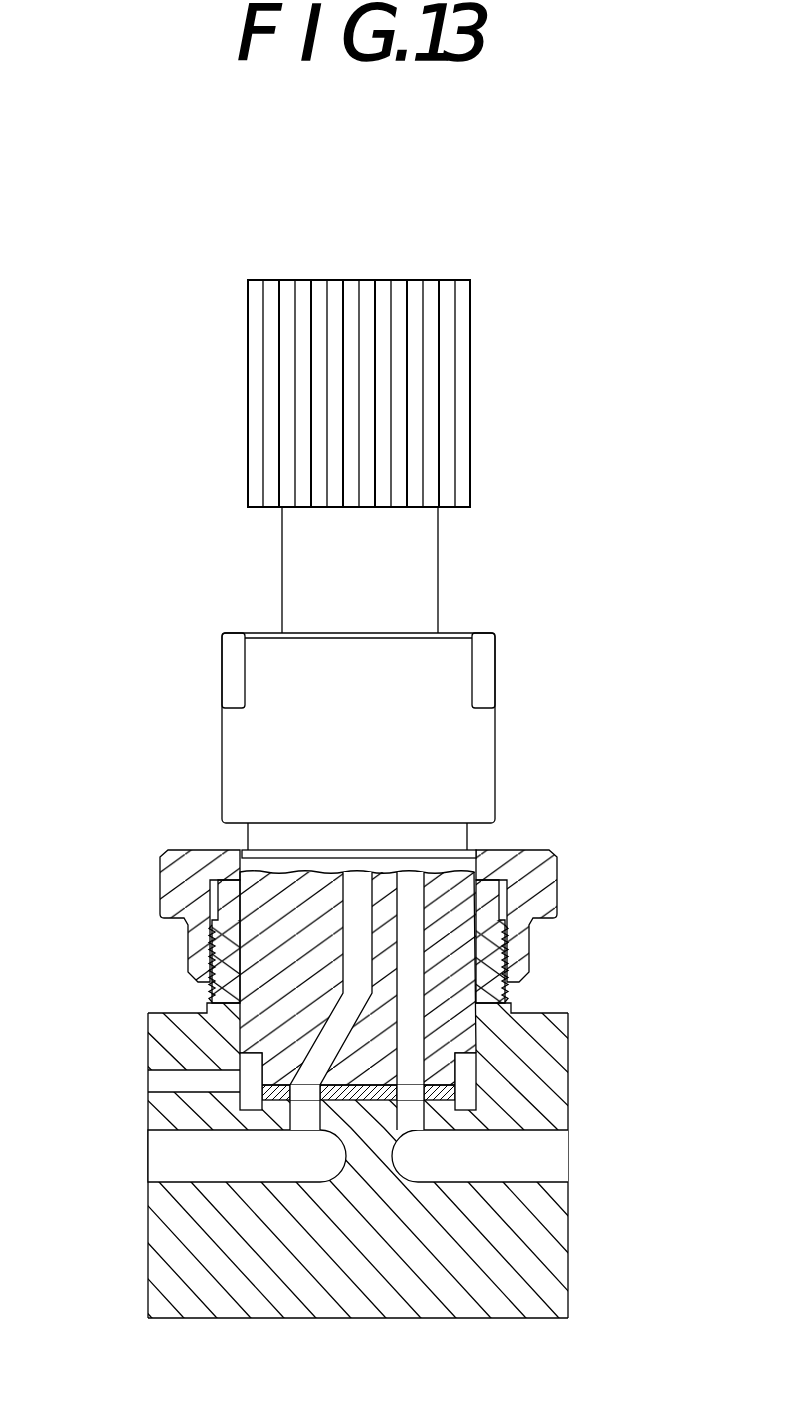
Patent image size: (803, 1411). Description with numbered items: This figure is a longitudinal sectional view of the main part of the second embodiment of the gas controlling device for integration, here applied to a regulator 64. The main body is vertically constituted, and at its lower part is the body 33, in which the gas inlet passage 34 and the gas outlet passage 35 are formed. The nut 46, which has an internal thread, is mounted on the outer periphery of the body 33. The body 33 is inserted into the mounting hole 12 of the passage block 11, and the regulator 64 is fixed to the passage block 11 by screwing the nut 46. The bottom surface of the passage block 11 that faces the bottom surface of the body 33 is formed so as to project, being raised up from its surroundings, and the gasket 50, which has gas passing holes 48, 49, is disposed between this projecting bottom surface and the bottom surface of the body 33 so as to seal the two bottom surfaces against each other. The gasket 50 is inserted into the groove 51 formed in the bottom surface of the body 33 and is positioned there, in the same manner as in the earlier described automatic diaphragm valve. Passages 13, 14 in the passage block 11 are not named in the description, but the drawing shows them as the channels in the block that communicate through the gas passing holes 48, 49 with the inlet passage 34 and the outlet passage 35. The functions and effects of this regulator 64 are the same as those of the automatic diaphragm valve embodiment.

The passage block 11 is at (572, 1087).
The mounting hole 12 is at (476, 992).
The first flow passage 13 is at (157, 1138).
The second flow passage 14 is at (557, 1140).
The body 33 is at (478, 848).
The gas inlet passage 34 is at (340, 1027).
The gas outlet passage 35 is at (476, 1052).
The nut 46 is at (173, 875).
The gas passing hole 48 is at (305, 1095).
The gas passing hole 49 is at (407, 1093).
The gasket 50 is at (273, 1083).
The groove 51 is at (240, 1053).
The regulator 64 is at (541, 273).